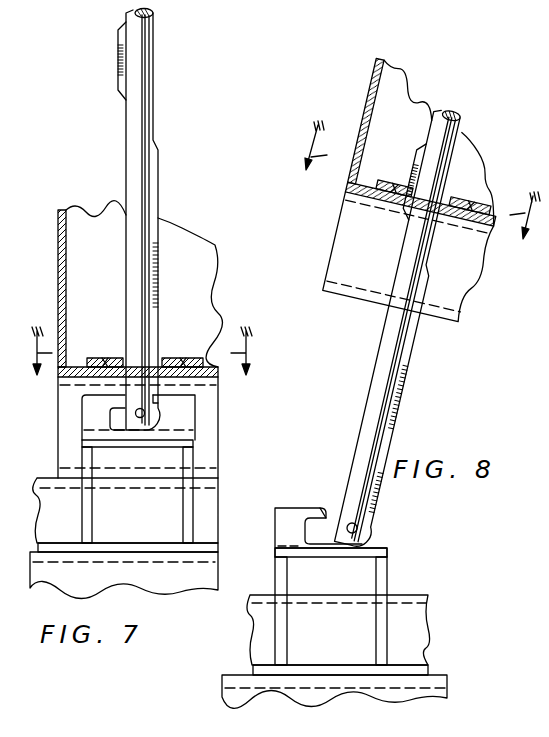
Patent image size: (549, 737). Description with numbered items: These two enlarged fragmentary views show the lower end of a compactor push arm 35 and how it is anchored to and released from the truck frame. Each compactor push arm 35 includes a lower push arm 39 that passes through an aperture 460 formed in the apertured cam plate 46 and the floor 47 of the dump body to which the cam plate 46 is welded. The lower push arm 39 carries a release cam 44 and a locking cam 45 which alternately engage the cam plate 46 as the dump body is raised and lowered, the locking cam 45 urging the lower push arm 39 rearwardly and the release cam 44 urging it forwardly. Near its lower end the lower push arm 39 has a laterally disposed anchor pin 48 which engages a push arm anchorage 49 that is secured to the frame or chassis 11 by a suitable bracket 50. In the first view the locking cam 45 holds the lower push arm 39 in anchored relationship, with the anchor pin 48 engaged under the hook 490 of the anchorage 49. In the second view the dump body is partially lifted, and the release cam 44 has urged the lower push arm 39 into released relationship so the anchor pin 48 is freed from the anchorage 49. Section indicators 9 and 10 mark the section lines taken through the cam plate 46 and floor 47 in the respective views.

In FIG. 7, the frame 11 is at (185, 578).
In FIG. 8, the frame 11 is at (440, 678).
In FIG. 7, the compactor push arm 35 is at (155, 59).
In FIG. 8, the compactor push arm 35 is at (455, 121).
In FIG. 7, the lower push arm 39 is at (143, 105).
In FIG. 8, the lower push arm 39 is at (382, 350).
In FIG. 7, the release cam 44 is at (118, 53).
In FIG. 8, the release cam 44 is at (412, 167).
In FIG. 7, the locking cam 45 is at (160, 192).
In FIG. 8, the locking cam 45 is at (407, 368).
In FIG. 7, the cam plate 46 is at (173, 357).
In FIG. 8, the cam plate 46 is at (462, 200).
In FIG. 7, the aperture 460 is at (120, 357).
In FIG. 8, the aperture 460 is at (392, 200).
In FIG. 7, the floor 47 is at (218, 366).
In FIG. 8, the floor 47 is at (497, 222).
In FIG. 7, the anchor pin 48 is at (145, 414).
In FIG. 8, the anchor pin 48 is at (352, 528).
In FIG. 7, the push arm anchorage 49 is at (90, 410).
In FIG. 8, the push arm anchorage 49 is at (290, 525).
In FIG. 7, the hook 490 is at (153, 401).
In FIG. 8, the hook 490 is at (323, 512).
In FIG. 7, the bracket 50 is at (193, 455).
In FIG. 8, the bracket 50 is at (283, 578).
In FIG. 7, the section line 9 is at (138, 366).
In FIG. 8, the section line 10 is at (411, 198).